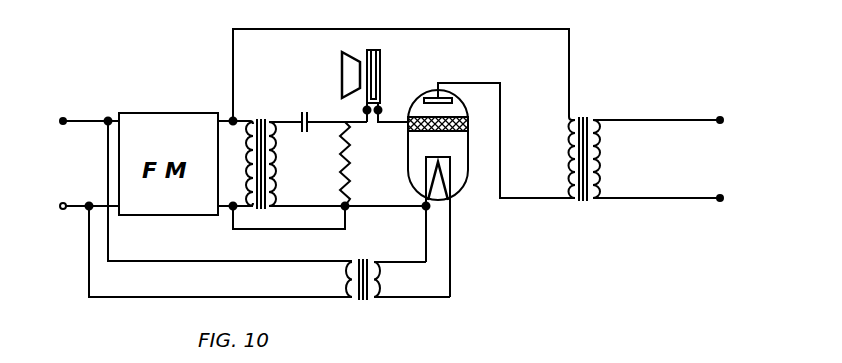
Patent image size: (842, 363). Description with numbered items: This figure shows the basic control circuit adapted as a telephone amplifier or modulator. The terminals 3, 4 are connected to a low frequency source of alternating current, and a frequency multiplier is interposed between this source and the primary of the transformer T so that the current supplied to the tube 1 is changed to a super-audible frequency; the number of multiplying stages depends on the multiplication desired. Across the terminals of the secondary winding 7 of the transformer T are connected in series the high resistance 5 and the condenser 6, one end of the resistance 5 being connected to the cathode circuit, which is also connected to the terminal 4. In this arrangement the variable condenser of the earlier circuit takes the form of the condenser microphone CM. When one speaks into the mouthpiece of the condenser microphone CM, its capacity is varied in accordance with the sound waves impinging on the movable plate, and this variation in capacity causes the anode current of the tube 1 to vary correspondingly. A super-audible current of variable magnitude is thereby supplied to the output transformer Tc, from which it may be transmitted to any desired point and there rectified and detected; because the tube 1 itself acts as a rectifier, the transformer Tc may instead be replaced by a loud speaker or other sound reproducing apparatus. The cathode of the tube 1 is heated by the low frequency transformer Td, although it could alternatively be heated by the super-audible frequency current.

The terminal 3 is at (88, 112).
The terminal 4 is at (87, 218).
The transformer T is at (273, 151).
The secondary winding 7 is at (281, 153).
The condenser 6 is at (309, 111).
The high resistance 5 is at (349, 153).
The condenser microphone CM is at (339, 72).
The mercury vapor tube 1 is at (469, 147).
The output transformer Tc is at (588, 113).
The low frequency transformer Td is at (364, 256).